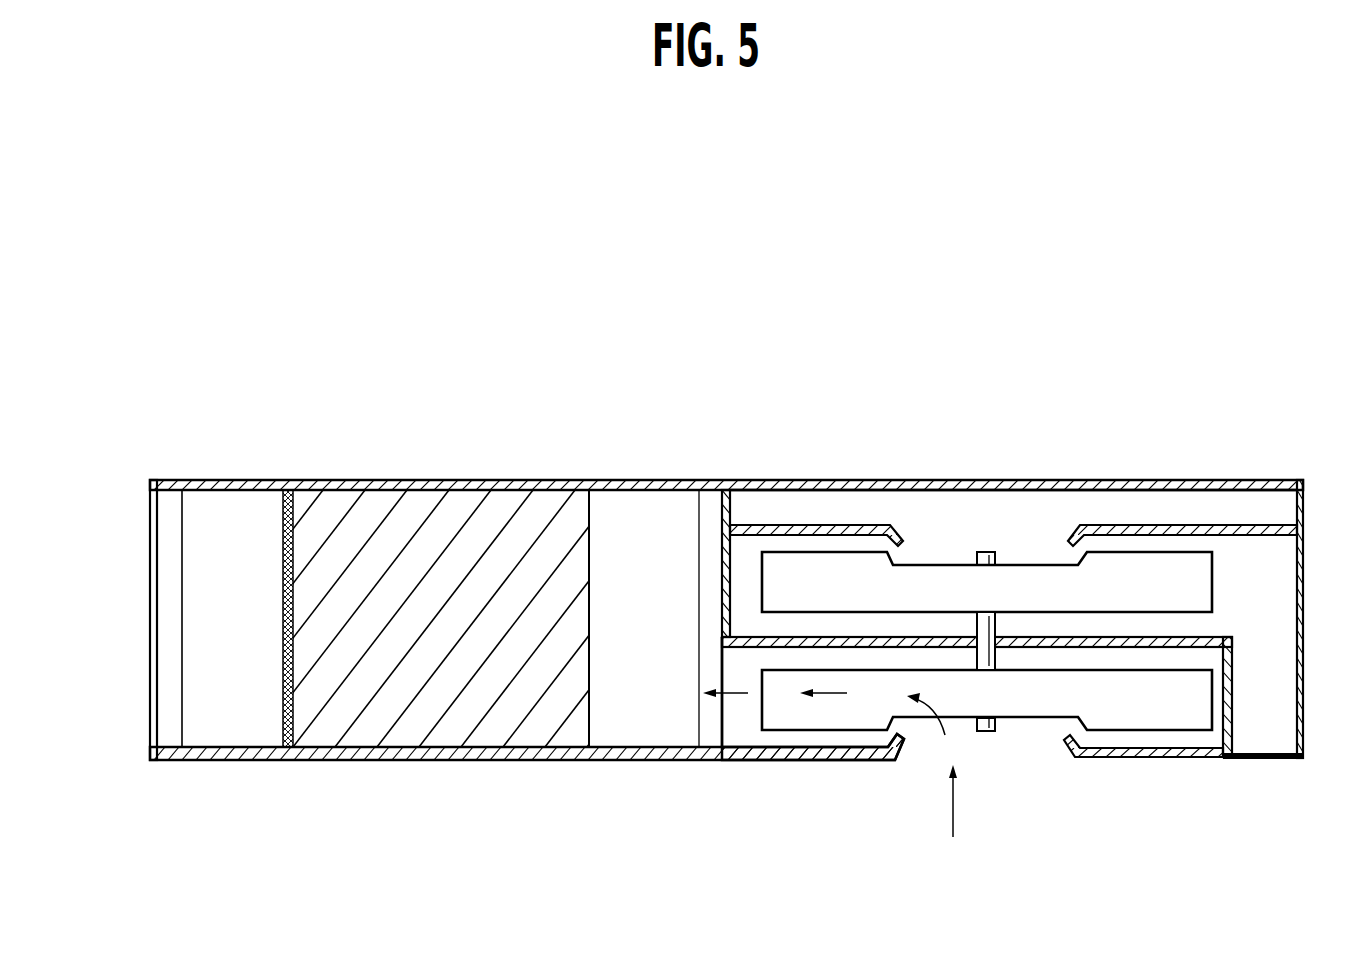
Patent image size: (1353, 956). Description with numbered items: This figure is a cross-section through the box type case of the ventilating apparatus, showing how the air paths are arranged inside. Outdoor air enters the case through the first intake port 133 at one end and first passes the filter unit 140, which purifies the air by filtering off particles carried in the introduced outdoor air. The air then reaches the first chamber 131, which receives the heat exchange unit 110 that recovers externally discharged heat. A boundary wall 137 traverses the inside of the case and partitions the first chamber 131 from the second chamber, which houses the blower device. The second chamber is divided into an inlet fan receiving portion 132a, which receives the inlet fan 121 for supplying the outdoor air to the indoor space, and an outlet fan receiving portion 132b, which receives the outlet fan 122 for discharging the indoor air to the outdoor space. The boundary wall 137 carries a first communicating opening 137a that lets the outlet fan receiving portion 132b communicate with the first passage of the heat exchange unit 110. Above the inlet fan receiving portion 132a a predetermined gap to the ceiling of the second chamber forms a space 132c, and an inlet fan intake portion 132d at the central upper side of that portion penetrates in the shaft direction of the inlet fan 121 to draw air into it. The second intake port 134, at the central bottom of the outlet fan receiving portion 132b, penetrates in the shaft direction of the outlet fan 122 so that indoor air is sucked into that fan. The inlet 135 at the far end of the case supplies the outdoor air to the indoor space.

The heat exchange unit 110 is at (468, 510).
The inlet fan 121 is at (1148, 567).
The outlet fan 122 is at (1150, 715).
The first chamber 131 is at (176, 505).
The inlet fan receiving portion 132a is at (748, 548).
The outlet fan receiving portion 132b is at (733, 730).
The space 132c is at (820, 502).
The inlet fan intake portion 132d is at (1068, 538).
The first intake port 133 is at (149, 609).
The second intake port 134 is at (1012, 750).
The inlet 135 is at (1280, 740).
The boundary wall 137 is at (723, 513).
The first communicating opening 137a is at (722, 717).
The filter unit 140 is at (290, 510).